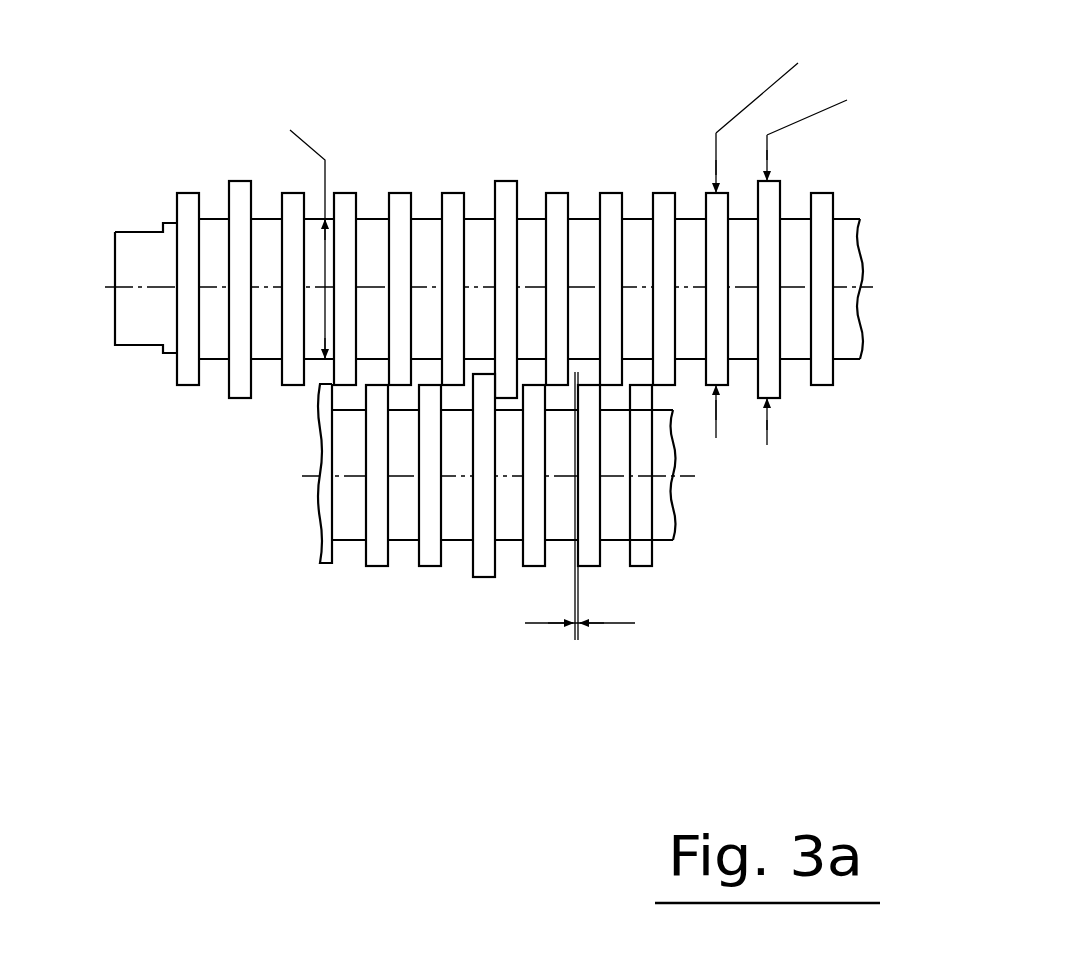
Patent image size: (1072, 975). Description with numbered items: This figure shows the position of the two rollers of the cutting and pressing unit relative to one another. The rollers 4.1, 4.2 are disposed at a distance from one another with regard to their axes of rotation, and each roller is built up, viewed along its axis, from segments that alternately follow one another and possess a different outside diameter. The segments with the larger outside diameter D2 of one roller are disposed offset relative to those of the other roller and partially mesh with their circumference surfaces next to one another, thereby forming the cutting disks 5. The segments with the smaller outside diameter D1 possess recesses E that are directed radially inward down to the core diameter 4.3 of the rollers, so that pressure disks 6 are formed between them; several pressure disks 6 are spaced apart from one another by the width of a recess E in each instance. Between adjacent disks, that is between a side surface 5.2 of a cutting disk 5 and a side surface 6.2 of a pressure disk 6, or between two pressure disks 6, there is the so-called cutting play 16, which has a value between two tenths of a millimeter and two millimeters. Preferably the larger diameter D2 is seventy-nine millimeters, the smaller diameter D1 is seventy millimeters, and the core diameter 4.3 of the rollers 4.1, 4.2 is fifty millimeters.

The roller 4.1 is at (658, 513).
The roller 4.2 is at (853, 230).
The core diameter 4.3 is at (281, 221).
The cutting disk 5 is at (485, 578).
The side surface of cutting disk 5.2 is at (257, 383).
The pressure disk 6 is at (428, 566).
The side surface of pressure disk 6.2 is at (570, 198).
The cutting play 16 is at (625, 627).
The recess E is at (427, 219).
The outside diameter of smaller segments D1 is at (788, 229).
The outside diameter of larger segments D2 is at (844, 258).